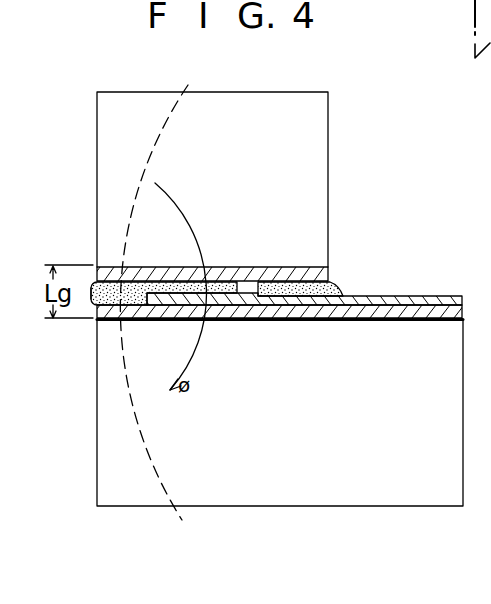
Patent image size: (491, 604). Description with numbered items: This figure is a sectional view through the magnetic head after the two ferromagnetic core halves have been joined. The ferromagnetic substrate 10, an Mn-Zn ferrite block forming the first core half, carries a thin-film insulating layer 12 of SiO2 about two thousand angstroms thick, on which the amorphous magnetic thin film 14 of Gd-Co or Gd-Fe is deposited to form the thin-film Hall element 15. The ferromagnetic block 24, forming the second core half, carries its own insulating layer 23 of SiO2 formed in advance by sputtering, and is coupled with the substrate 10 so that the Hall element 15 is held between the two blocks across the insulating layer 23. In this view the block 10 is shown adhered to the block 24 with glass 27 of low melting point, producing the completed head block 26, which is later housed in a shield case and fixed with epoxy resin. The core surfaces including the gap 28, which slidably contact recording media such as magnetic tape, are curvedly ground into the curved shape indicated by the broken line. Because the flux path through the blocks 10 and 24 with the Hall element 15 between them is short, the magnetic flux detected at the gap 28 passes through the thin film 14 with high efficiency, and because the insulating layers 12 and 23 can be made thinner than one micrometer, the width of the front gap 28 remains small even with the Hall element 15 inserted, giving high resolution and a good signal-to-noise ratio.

The ferromagnetic substrate 10 is at (288, 492).
The thin-film insulating layer 12 is at (363, 313).
The amorphous magnetic thin film 14 is at (243, 313).
The thin-film Hall element 15 is at (151, 273).
The insulating layer 23 is at (236, 271).
The ferromagnetic block 24 is at (262, 100).
The head block 26 is at (368, 203).
The glass 27 is at (337, 283).
The gap 28 is at (89, 278).